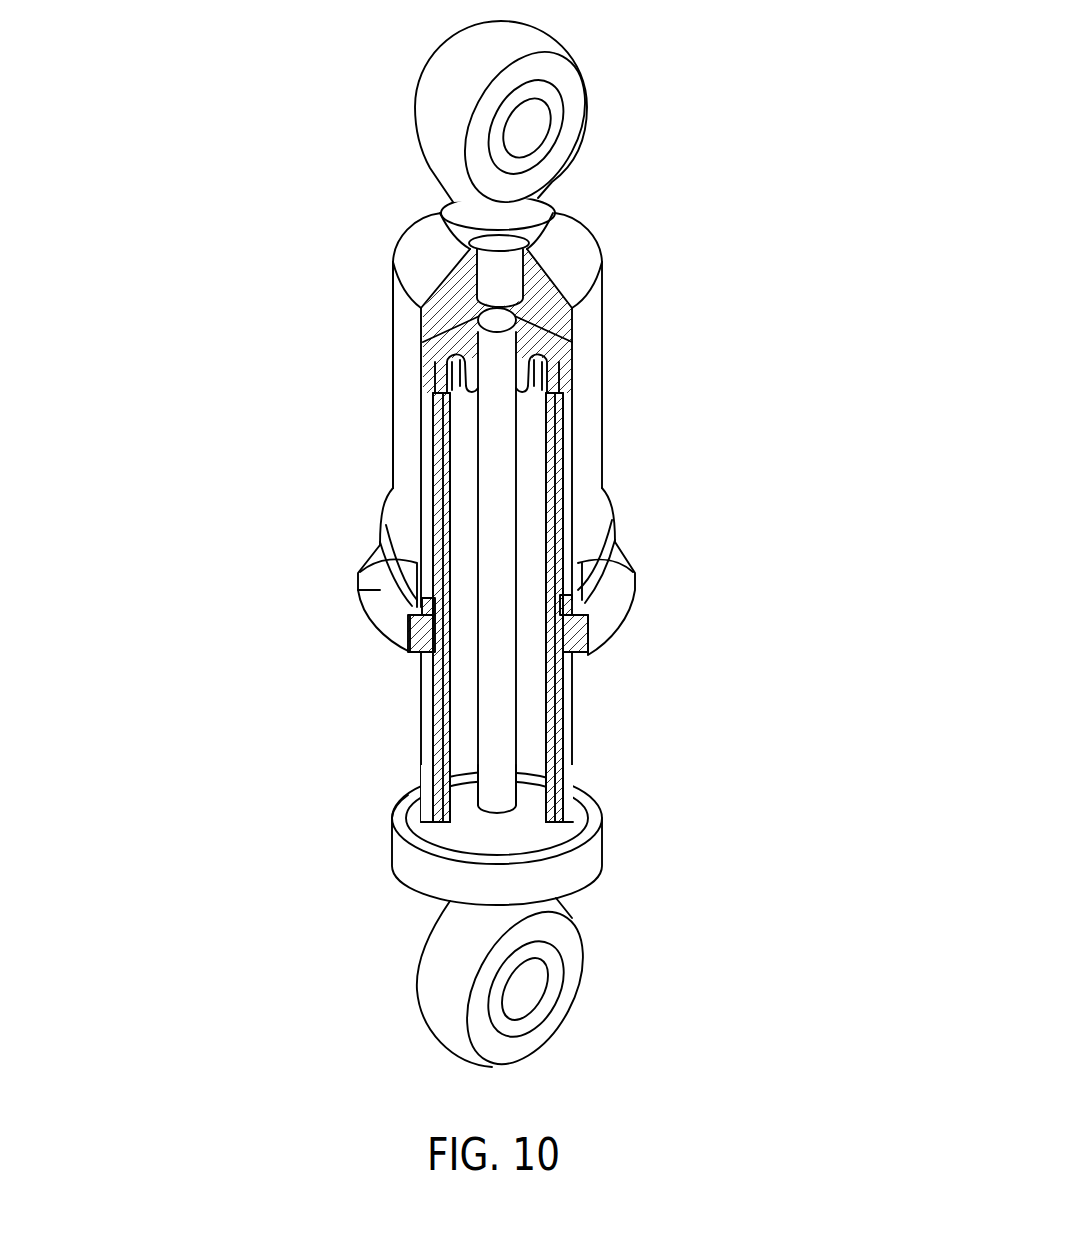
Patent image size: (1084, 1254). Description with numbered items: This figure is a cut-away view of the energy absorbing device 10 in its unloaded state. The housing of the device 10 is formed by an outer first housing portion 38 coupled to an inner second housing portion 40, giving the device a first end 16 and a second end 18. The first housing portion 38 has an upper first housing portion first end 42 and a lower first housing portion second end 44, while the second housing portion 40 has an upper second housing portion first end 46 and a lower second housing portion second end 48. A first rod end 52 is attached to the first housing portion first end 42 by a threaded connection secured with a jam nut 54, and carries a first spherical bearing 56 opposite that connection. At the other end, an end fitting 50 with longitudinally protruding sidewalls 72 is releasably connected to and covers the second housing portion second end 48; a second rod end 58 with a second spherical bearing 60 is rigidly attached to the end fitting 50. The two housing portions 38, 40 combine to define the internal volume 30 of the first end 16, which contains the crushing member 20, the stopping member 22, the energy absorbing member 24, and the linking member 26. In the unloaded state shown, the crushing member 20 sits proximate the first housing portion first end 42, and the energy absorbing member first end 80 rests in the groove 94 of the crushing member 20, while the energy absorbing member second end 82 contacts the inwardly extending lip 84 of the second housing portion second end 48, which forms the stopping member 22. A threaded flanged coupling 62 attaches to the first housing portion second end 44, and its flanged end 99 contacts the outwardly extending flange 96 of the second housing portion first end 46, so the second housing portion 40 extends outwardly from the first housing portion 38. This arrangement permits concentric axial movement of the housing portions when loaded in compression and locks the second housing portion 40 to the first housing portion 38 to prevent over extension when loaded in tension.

The energy absorbing device 10 is at (688, 63).
The first end 16 is at (311, 291).
The second end 18 is at (364, 987).
The crushing member 20 is at (452, 350).
The stopping member 22 is at (525, 830).
The energy absorbing member 24 is at (447, 442).
The linking member 26 is at (507, 485).
The internal volume 30 is at (463, 487).
The first housing portion 38 is at (604, 332).
The second housing portion 40 is at (572, 693).
The first housing portion first end 42 is at (612, 249).
The first housing portion second end 44 is at (626, 495).
The second housing portion first end 46 is at (382, 421).
The second housing portion second end 48 is at (610, 785).
The end fitting 50 is at (603, 836).
The first rod end 52 is at (588, 88).
The jam nut 54 is at (556, 212).
The first spherical bearing 56 is at (560, 133).
The second rod end 58 is at (582, 957).
The second spherical bearing 60 is at (548, 997).
The flanged coupling 62 is at (638, 583).
The sidewalls 72 is at (404, 794).
The energy absorbing member first end 80 is at (538, 378).
The energy absorbing member second end 82 is at (438, 833).
The lip 84 is at (553, 828).
The groove 94 is at (464, 371).
The flange 96 is at (432, 608).
The flanged end 99 is at (412, 643).